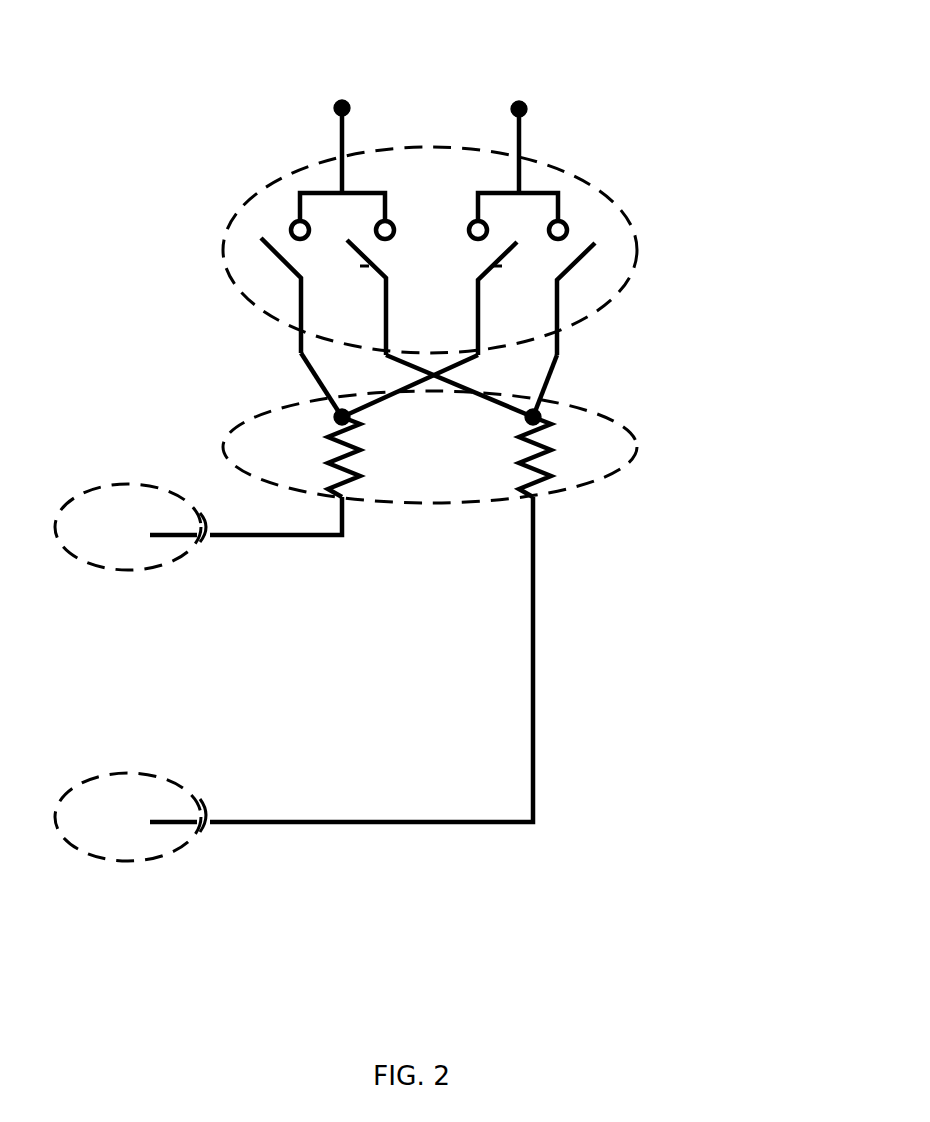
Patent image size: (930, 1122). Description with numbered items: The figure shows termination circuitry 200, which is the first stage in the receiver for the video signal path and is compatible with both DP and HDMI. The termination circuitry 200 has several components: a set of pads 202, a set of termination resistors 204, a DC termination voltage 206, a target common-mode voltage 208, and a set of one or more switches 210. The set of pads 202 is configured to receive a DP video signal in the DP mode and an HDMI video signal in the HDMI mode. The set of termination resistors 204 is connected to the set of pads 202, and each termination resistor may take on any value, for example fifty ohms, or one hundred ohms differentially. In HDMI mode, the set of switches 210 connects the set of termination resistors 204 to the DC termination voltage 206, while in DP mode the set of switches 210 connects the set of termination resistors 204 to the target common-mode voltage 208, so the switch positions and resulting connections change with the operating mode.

The termination circuitry 200 is at (614, 872).
The set of pads 202 is at (97, 565).
The set of termination resistors 204 is at (583, 485).
The DC termination voltage 206 is at (283, 102).
The target common-mode voltage 208 is at (608, 110).
The set of switches 210 is at (230, 275).